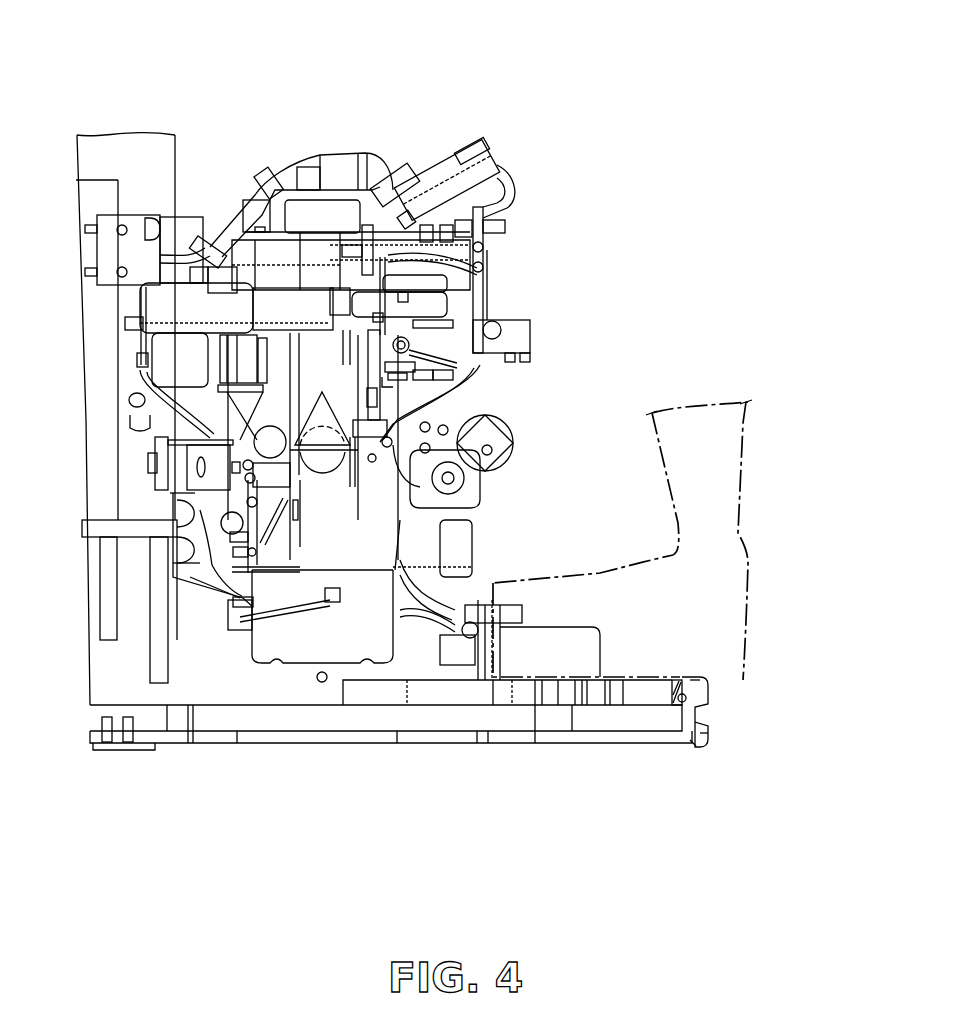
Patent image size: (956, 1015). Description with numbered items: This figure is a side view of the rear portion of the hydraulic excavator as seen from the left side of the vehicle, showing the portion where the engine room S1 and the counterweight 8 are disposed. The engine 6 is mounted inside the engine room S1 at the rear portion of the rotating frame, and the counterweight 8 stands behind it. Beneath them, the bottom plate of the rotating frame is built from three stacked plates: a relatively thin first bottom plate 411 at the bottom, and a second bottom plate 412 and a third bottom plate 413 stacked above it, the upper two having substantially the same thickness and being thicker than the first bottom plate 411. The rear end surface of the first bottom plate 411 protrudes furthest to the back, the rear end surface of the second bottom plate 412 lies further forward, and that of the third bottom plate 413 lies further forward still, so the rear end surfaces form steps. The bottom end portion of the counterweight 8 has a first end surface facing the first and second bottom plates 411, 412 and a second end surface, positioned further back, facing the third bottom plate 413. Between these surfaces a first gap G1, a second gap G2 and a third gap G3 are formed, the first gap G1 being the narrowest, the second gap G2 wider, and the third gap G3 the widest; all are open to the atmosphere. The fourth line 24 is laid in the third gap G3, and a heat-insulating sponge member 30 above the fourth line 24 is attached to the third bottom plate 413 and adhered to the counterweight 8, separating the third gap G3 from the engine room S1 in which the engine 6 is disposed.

The engine 6 is at (336, 147).
The engine room S1 is at (530, 228).
The counterweight 8 is at (727, 593).
The sponge member 30 is at (677, 677).
The third gap G3 is at (700, 680).
The fourth line 24 is at (688, 698).
The second gap G2 is at (707, 733).
The first gap G1 is at (693, 740).
The first bottom plate 411 is at (643, 737).
The second bottom plate 412 is at (590, 720).
The third bottom plate 413 is at (570, 693).